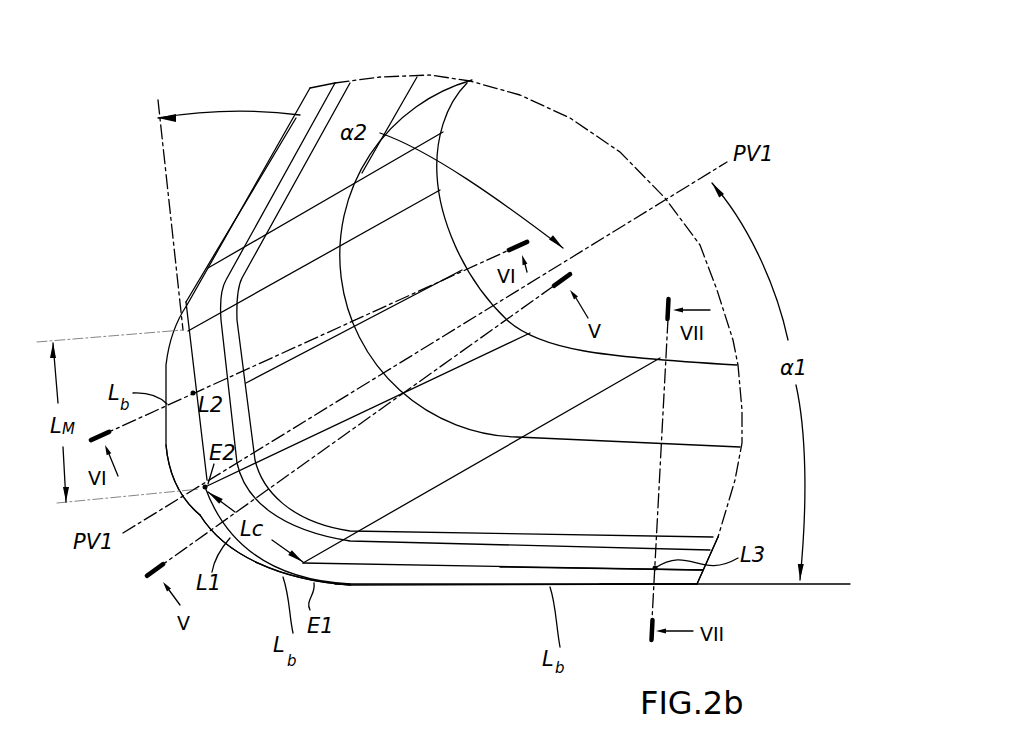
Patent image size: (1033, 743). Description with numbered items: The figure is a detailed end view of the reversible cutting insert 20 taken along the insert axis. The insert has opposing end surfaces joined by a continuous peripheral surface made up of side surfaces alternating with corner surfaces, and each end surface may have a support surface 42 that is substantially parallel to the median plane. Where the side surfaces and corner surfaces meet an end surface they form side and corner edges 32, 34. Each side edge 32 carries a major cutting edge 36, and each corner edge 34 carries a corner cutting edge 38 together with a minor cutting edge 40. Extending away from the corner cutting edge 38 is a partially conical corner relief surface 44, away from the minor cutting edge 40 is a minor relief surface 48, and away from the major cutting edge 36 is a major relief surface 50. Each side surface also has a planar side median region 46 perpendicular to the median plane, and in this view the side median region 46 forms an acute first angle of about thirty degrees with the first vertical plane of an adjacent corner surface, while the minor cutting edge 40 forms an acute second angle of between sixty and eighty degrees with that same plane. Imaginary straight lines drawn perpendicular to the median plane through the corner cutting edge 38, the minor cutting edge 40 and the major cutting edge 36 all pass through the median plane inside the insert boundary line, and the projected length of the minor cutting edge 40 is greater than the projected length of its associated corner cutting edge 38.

The cutting insert 20 is at (587, 100).
The side edge 32 is at (458, 570).
The corner edge 34 is at (243, 558).
The major cutting edge 36 is at (608, 568).
The corner cutting edge 38 is at (262, 562).
The minor cutting edge 40 is at (190, 381).
The support surface 42 is at (478, 153).
The corner relief surface 44 is at (200, 515).
The side median region 46 is at (633, 587).
The minor relief surface 48 is at (187, 423).
The major relief surface 50 is at (512, 575).